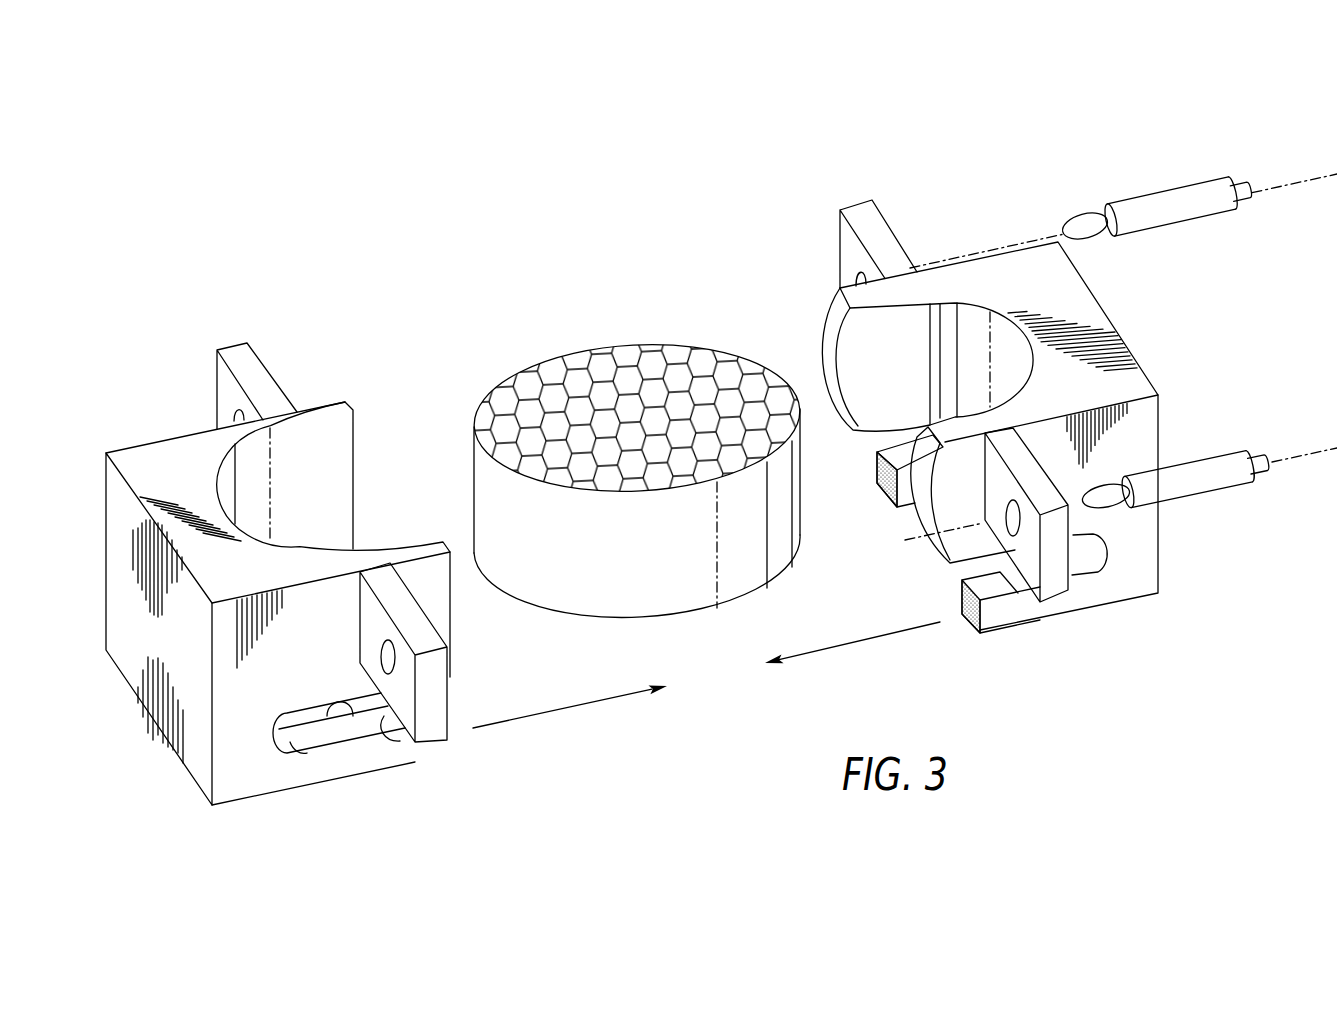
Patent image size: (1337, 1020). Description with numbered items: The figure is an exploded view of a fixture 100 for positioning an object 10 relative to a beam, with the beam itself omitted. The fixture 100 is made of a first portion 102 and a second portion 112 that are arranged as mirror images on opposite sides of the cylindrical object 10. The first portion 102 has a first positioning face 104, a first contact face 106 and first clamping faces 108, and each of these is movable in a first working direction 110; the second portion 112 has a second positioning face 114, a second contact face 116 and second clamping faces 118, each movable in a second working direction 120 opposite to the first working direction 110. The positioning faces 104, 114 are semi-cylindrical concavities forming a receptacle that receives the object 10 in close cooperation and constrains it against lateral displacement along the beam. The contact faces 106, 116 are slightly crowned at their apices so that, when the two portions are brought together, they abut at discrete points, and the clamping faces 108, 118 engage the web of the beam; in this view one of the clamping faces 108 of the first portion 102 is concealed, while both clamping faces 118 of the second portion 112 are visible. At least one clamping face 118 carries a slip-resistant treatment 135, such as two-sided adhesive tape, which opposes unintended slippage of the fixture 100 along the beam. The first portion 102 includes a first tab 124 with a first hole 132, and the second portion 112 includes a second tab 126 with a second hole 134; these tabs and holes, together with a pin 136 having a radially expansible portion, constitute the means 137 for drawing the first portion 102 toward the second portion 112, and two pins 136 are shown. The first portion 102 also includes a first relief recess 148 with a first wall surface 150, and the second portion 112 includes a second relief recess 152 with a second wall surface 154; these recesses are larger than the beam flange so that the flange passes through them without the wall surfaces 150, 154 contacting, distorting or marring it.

The object 10 is at (646, 572).
The fixture 100 is at (338, 172).
The first portion 102 is at (264, 302).
The first positioning face 104 is at (331, 496).
The first contact face 106 is at (378, 487).
The first clamping face 108 is at (478, 709).
The first working direction 110 is at (563, 710).
The second portion 112 is at (880, 127).
The second positioning face 114 is at (913, 367).
The second contact face 116 is at (790, 325).
The second clamping face 118 is at (848, 476).
The second working direction 120 is at (830, 650).
The first tab 124 is at (270, 377).
The second tab 126 is at (867, 222).
The first hole 132 is at (238, 413).
The second hole 134 is at (857, 282).
The slip-resistant treatment 135 is at (880, 492).
The pin 136 is at (1170, 195).
The means for drawing the first portion toward the second portion 137 is at (1107, 165).
The first relief recess 148 is at (287, 753).
The first wall surface 150 is at (330, 722).
The second relief recess 152 is at (1115, 598).
The second wall surface 154 is at (1113, 550).